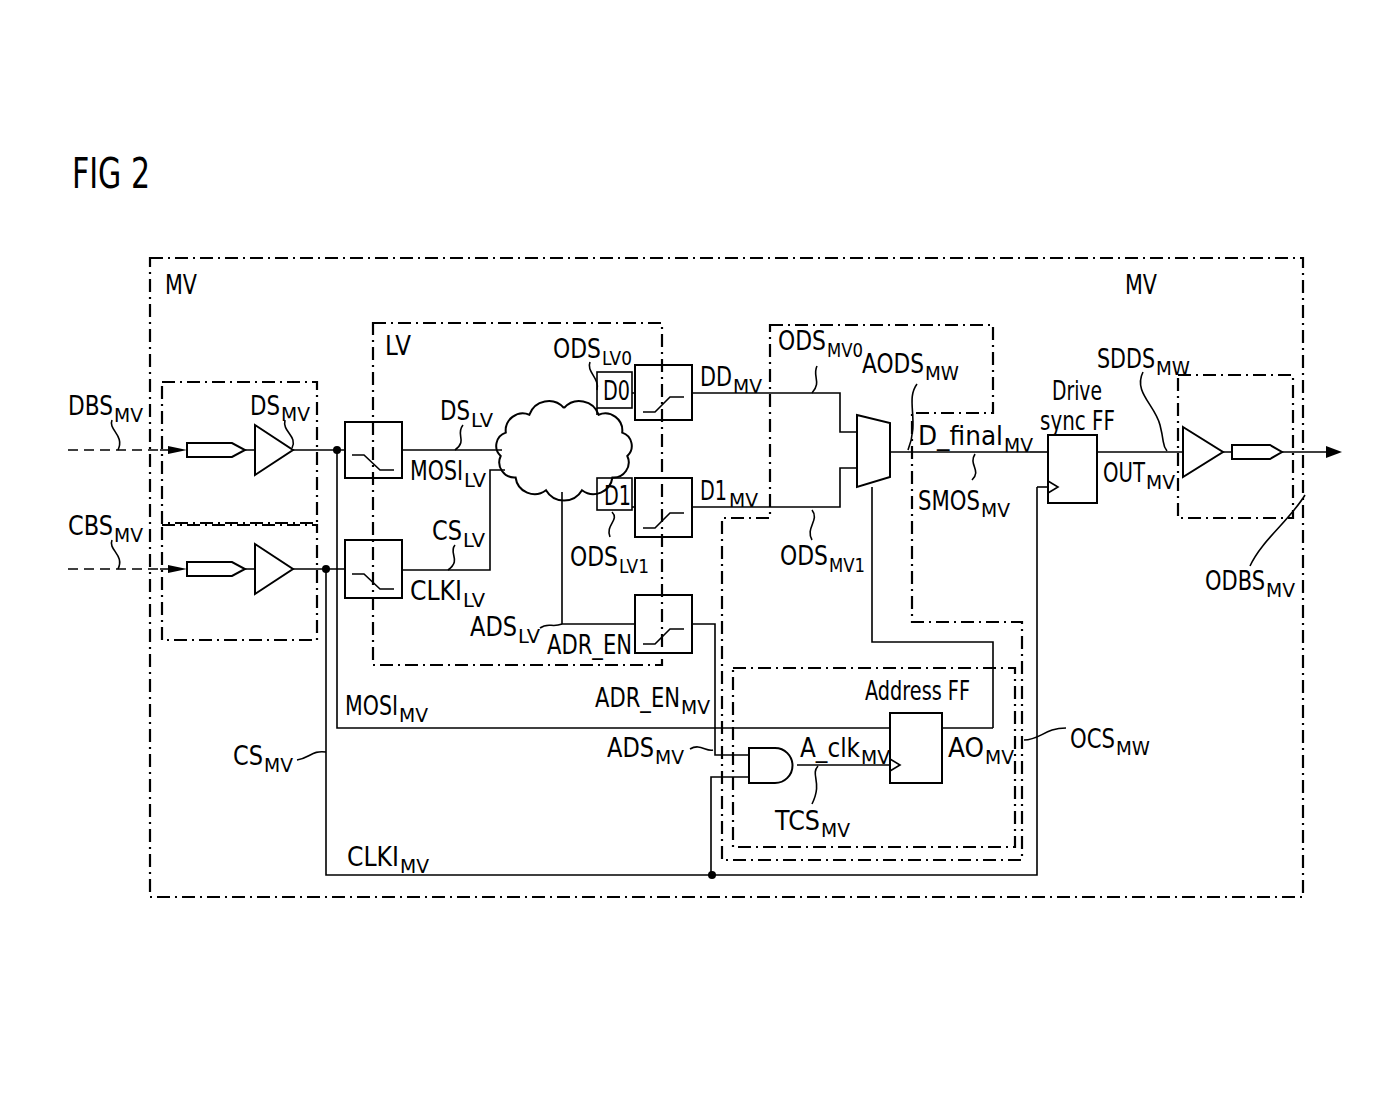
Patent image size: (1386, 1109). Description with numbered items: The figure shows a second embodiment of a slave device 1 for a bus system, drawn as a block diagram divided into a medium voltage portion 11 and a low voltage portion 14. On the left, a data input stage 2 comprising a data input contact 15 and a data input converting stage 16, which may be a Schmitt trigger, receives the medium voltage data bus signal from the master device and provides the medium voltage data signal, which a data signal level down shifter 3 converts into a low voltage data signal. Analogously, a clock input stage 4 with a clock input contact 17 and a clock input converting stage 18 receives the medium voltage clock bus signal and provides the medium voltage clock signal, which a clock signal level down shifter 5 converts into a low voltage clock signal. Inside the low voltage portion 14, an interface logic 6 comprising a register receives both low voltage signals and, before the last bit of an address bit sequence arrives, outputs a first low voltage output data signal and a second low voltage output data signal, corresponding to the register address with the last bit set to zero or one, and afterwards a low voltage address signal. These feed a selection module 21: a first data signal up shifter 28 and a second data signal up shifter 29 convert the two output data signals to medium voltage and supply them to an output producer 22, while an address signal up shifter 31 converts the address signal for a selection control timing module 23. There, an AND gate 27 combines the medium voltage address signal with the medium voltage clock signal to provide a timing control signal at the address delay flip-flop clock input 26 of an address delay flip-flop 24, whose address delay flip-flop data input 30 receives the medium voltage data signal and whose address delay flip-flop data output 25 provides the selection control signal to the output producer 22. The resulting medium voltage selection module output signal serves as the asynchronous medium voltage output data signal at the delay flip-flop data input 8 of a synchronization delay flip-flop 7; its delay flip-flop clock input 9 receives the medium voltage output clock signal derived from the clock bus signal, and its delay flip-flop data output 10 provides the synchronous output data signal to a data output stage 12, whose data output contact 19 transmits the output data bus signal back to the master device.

The slave device 1 is at (1216, 213).
The data input stage 2 is at (246, 382).
The data signal level down shifter 3 is at (390, 422).
The clock input stage 4 is at (240, 641).
The clock signal level down shifter 5 is at (390, 540).
The interface logic 6 is at (537, 406).
The synchronization delay flip-flop 7 is at (1097, 490).
The delay flip-flop data input 8 is at (1048, 458).
The delay flip-flop clock input 9 is at (1046, 490).
The delay flip-flop data output 10 is at (1108, 449).
The medium voltage portion 11 is at (718, 258).
The data output stage 12 is at (1228, 375).
The low voltage portion 14 is at (509, 323).
The data input contact 15 is at (212, 458).
The data input converting stage 16 is at (275, 468).
The clock input contact 17 is at (212, 577).
The clock input converting stage 18 is at (275, 587).
The data output contact 19 is at (1208, 428).
The selection module 21 is at (868, 325).
The output producer 22 is at (857, 452).
The selection control timing module 23 is at (786, 668).
The address delay flip-flop 24 is at (915, 784).
The address delay flip-flop data output 25 is at (942, 730).
The address delay flip-flop clock input 26 is at (888, 767).
The AND gate 27 is at (762, 784).
The first data signal up shifter 28 is at (680, 365).
The second data signal up shifter 29 is at (680, 478).
The address delay flip-flop data input 30 is at (888, 728).
The address signal up shifter 31 is at (680, 595).